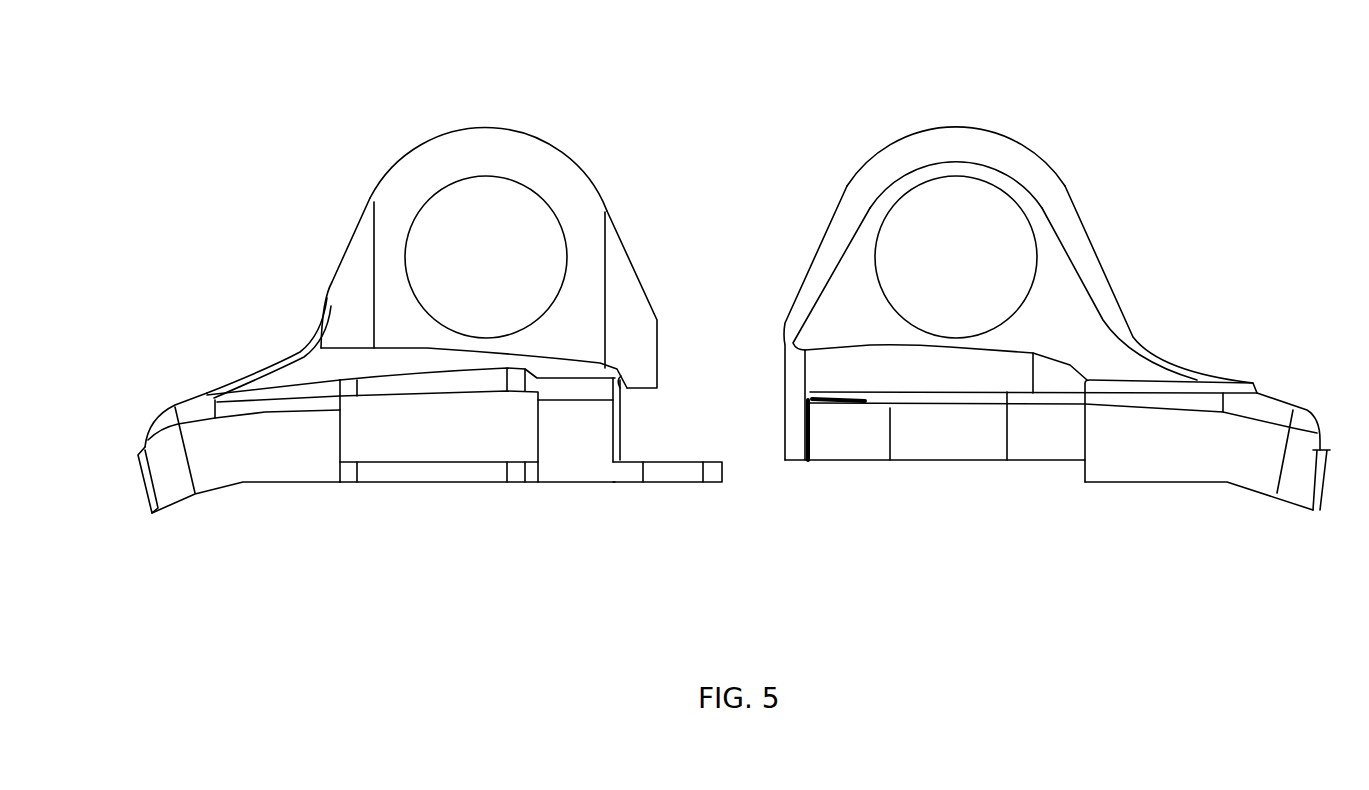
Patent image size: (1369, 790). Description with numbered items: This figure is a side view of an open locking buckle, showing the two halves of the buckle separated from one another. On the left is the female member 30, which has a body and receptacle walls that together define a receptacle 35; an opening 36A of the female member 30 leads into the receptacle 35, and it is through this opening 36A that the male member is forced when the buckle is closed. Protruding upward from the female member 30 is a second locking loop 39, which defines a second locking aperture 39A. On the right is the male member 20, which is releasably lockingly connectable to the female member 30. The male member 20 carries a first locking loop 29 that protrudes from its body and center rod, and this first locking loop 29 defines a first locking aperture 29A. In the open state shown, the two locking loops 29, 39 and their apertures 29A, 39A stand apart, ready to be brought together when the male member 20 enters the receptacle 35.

The second locking loop 39 is at (427, 172).
The second locking aperture 39A is at (482, 214).
The female member 30 is at (257, 413).
The receptacle 35 is at (446, 430).
The opening 36A is at (710, 437).
The first locking loop 29 is at (928, 160).
The first locking aperture 29A is at (983, 205).
The male member 20 is at (1207, 400).